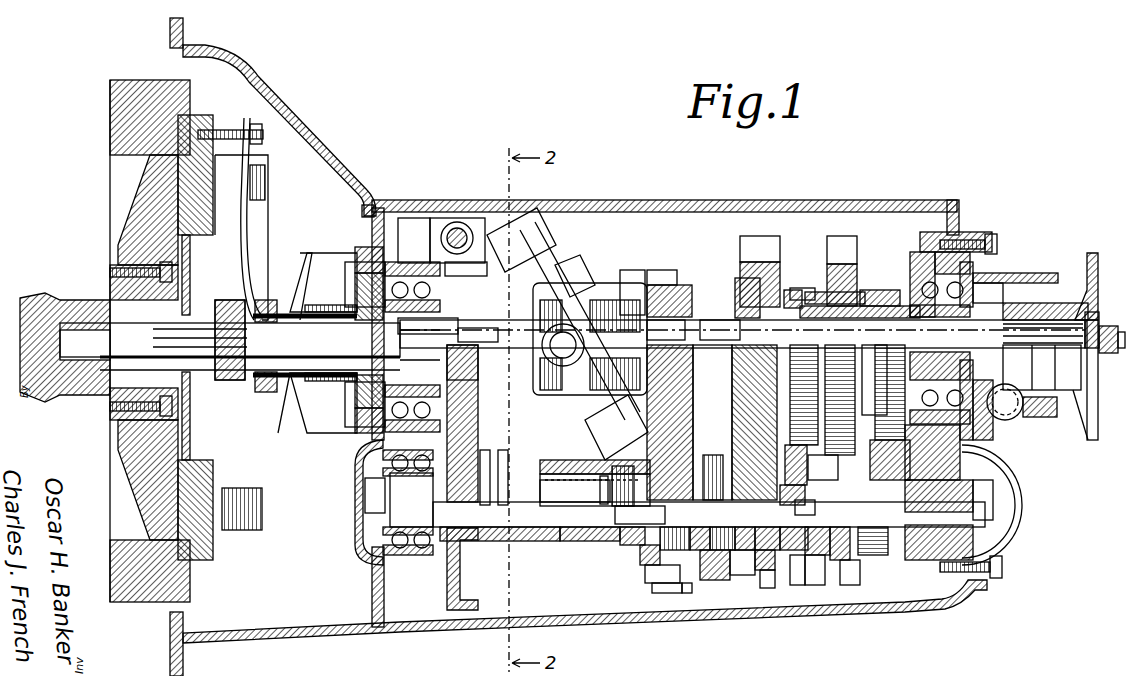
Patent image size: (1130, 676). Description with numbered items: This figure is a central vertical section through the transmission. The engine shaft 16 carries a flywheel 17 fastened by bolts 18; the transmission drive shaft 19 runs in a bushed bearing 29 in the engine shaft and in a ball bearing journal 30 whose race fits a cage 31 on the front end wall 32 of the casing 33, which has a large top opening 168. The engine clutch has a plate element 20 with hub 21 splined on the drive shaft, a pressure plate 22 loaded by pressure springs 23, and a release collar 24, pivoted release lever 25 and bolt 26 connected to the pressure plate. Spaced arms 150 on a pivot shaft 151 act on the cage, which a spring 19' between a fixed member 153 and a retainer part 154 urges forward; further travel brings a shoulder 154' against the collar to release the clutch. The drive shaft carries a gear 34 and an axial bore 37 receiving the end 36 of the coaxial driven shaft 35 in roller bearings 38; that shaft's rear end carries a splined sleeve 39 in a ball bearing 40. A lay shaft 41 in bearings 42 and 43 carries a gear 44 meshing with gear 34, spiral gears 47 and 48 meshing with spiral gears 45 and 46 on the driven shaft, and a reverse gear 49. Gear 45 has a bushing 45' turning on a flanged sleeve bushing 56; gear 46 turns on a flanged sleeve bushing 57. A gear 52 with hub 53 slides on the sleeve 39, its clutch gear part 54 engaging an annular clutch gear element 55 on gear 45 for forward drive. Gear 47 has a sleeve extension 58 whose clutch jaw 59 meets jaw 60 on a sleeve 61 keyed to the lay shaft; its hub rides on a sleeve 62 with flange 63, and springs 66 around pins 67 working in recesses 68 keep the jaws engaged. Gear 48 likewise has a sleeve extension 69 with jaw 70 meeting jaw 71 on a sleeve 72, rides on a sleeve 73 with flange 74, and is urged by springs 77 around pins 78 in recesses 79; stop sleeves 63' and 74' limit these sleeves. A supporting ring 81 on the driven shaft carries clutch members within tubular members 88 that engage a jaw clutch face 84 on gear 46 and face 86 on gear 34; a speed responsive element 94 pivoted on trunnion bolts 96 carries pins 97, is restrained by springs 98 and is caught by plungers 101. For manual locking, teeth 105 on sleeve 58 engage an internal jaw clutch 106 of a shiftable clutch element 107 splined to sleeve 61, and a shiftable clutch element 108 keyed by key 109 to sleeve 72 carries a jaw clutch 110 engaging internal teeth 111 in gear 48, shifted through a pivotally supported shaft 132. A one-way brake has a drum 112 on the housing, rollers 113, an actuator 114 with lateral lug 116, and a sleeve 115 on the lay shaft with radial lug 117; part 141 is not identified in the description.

The engine shaft 16 is at (58, 297).
The flywheel 17 is at (122, 136).
The bolts 18 is at (110, 273).
The transmission drive shaft 19 is at (250, 357).
The spring 19' is at (331, 297).
The disk or plate element 20 is at (190, 262).
The hub 21 is at (218, 392).
The pressure plate 22 is at (205, 205).
The pressure springs 23 is at (255, 530).
The release collar 24 is at (282, 298).
The release lever 25 is at (250, 232).
The bolt 26 is at (210, 128).
The bushed bearing 29 is at (108, 405).
The ball bearing journal 30 is at (466, 272).
The cage 31 is at (358, 268).
The front end wall 32 is at (366, 210).
The casing 33 is at (578, 620).
The gear 34 is at (482, 410).
The driven shaft 35 is at (885, 318).
The end of driven shaft 36 is at (428, 333).
The axial bore 37 is at (348, 336).
The roller bearings 38 is at (412, 347).
The sleeve 39 is at (742, 334).
The ball bearing 40 is at (924, 262).
The lay or stud shaft 41 is at (568, 545).
The bearing 42 is at (358, 470).
The bearing 43 is at (905, 440).
The gear 44 is at (478, 436).
The spiral gear 45 is at (760, 259).
The bushing 45' is at (729, 286).
The spiral gear 46 is at (652, 280).
The spiral gear 47 is at (762, 592).
The spiral gear 48 is at (662, 595).
The gear 49 is at (870, 558).
The gear 52 is at (842, 262).
The hub 53 is at (858, 290).
The clutch gear part 54 is at (802, 288).
The annular clutch gear element 55 is at (792, 290).
The flanged sleeve bushing 56 is at (720, 330).
The flanged sleeve bushing 57 is at (668, 330).
The sleeve extension 58 is at (796, 588).
The clutch jaw 59 is at (798, 458).
The clutch jaw 60 is at (820, 476).
The sleeve 61 is at (838, 565).
The sleeve 62 is at (788, 552).
The flange 63 is at (732, 577).
The stop sleeve 63' is at (810, 506).
The springs 66 is at (767, 525).
The pins 67 is at (743, 525).
The recesses 68 is at (760, 575).
The sleeve extension 69 is at (625, 545).
The clutch jaw 70 is at (633, 486).
The clutch jaw 71 is at (593, 488).
The sleeve 72 is at (535, 545).
The sleeve 73 is at (671, 525).
The flange 74 is at (712, 567).
The stop sleeve 74' is at (639, 512).
The springs 77 is at (695, 525).
The pins 78 is at (719, 525).
The recesses 79 is at (688, 595).
The supporting ring 81 is at (560, 262).
The jaw clutch face 84 is at (586, 340).
The jaw clutch face 86 is at (550, 311).
The tubular member 88 is at (598, 295).
The speed responsive element 94 is at (518, 262).
The trunnion pins or bolts 96 is at (615, 311).
The pins 97 is at (615, 377).
The springs 98 is at (546, 377).
The plungers 101 is at (563, 255).
The jaw clutch teeth 105 is at (815, 590).
The internal jaw clutch 106 is at (812, 560).
The shiftable clutch element 107 is at (850, 590).
The shiftable clutch element 108 is at (572, 462).
The key 109 is at (573, 489).
The jaw clutch 110 is at (645, 565).
The jaw clutch teeth 111 is at (655, 580).
The drum 112 is at (990, 430).
The rollers 113 is at (1015, 475).
The actuator 114 is at (938, 492).
The sleeve 115 is at (995, 512).
The lug 116 is at (1000, 440).
The lug 117 is at (1000, 568).
The pivotally supported shaft 132 is at (483, 332).
The sleeve 141 is at (870, 290).
The spaced arms 150 is at (428, 250).
The pivot shaft 151 is at (455, 225).
The fixed member 153 is at (310, 250).
The retainer part 154 is at (331, 395).
The shoulder 154' is at (289, 403).
The opening 168 is at (925, 203).